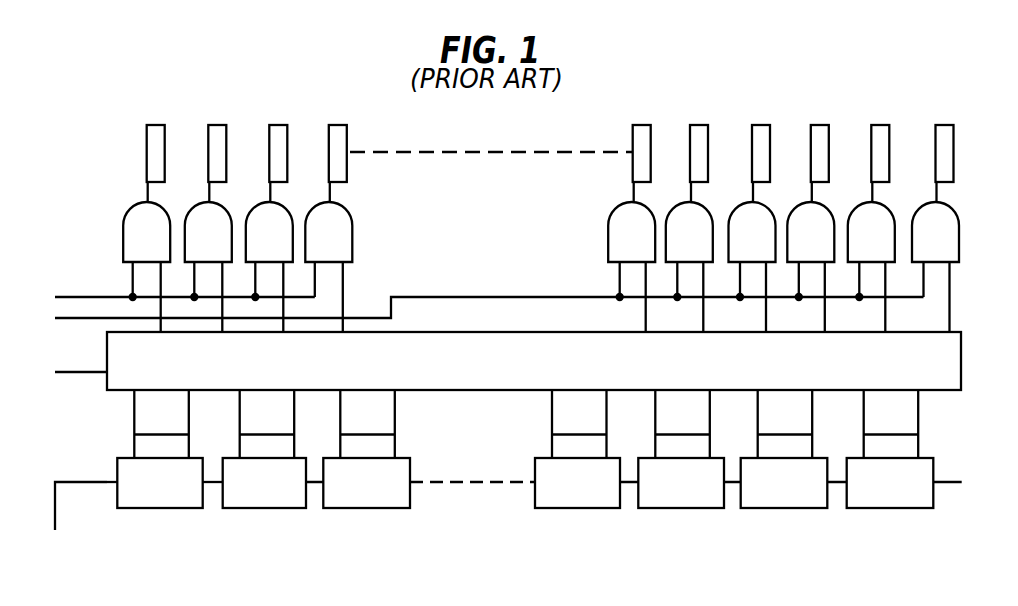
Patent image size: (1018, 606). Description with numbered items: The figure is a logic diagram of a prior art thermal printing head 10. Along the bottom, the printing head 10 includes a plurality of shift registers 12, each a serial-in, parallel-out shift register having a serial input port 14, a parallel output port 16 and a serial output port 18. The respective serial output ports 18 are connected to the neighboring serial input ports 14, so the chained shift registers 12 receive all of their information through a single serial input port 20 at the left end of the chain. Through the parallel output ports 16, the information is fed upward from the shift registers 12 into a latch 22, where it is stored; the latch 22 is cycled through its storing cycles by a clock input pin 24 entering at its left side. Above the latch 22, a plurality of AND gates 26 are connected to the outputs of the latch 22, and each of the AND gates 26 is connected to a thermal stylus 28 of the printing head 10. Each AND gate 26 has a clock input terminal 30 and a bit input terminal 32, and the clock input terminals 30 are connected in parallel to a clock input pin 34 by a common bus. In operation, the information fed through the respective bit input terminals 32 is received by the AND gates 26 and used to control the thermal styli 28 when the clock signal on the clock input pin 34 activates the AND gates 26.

The thermal printing head 10 is at (982, 388).
The shift register 12 is at (157, 508).
The serial input port 14 is at (117, 483).
The parallel output port 16 is at (189, 435).
The serial output port 18 is at (207, 483).
The single serial input port 20 is at (53, 498).
The latch 22 is at (960, 368).
The clock input pin 24 is at (58, 352).
The AND gate 26 is at (527, 249).
The thermal stylus 28 is at (152, 150).
The clock input terminal 30 is at (132, 277).
The bit input terminal 32 is at (161, 276).
The clock input pin 34 is at (59, 281).